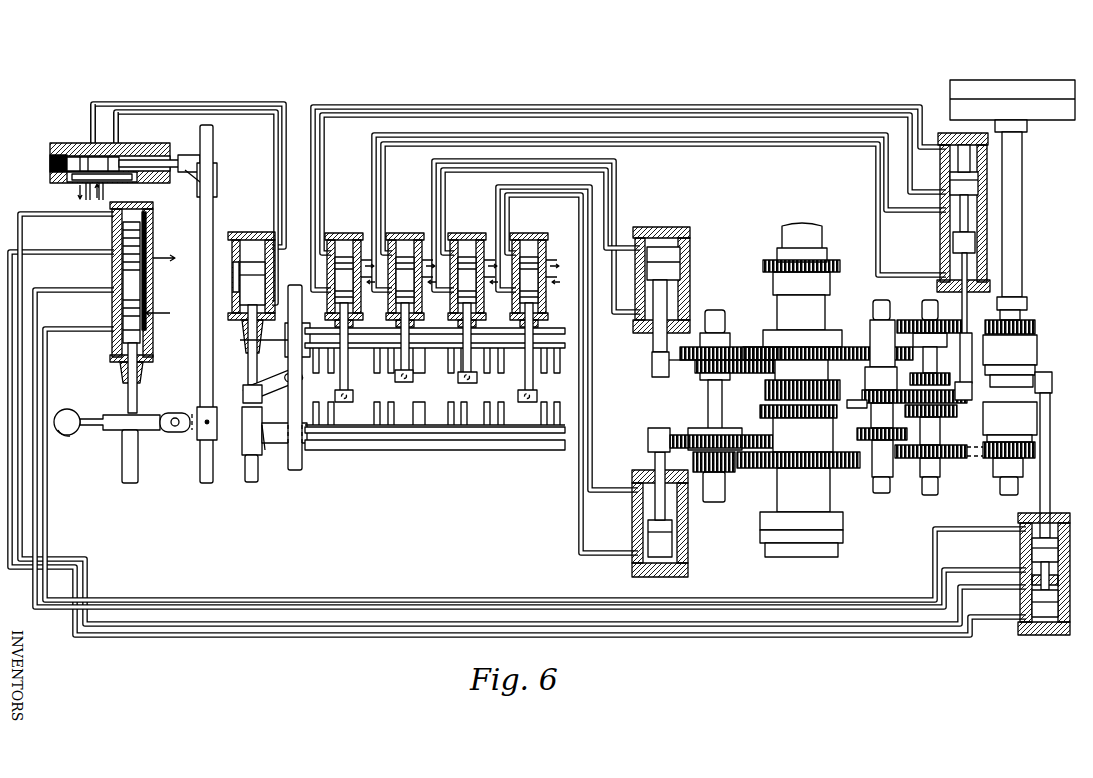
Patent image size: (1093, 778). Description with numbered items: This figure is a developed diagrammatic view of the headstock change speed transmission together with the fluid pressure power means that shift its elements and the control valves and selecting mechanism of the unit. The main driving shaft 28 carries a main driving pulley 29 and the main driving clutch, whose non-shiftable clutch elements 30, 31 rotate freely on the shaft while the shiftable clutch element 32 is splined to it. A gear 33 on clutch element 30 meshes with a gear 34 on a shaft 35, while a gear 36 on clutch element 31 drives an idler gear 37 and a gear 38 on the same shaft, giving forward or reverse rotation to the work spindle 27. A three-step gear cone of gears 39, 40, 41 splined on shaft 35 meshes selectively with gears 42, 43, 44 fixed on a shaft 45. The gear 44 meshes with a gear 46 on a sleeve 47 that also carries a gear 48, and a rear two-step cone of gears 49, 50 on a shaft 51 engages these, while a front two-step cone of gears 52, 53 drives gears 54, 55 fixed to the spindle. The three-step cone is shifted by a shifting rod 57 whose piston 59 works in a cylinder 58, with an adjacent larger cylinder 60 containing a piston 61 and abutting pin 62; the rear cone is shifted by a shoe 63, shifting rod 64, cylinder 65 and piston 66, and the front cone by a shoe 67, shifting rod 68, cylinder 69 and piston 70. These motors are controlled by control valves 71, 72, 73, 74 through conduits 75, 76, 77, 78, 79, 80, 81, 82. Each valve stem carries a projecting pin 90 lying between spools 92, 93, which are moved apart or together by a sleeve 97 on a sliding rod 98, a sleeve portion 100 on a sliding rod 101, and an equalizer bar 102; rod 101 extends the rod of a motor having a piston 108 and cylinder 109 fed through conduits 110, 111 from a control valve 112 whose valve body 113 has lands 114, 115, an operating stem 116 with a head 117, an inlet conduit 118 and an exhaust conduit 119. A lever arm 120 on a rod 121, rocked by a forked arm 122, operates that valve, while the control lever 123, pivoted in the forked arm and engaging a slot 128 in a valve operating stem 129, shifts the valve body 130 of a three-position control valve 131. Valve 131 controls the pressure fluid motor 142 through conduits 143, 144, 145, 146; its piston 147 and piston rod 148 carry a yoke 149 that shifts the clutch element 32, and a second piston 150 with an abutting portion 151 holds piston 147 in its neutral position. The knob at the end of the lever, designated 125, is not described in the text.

The work spindle 27 is at (805, 557).
The main driving shaft 28 is at (1022, 200).
The main driving pulley 29 is at (1047, 80).
The non-shiftable clutch element 30 is at (1037, 418).
The non-shiftable clutch element 31 is at (1037, 350).
The shiftable clutch element 32 is at (1035, 370).
The gear 33 is at (990, 458).
The gear 34 is at (950, 458).
The shaft 35 is at (930, 495).
The gear 36 is at (1037, 315).
The idler gear 37 is at (980, 320).
The gear 38 is at (912, 320).
The gear of three-step gear cone 39 is at (935, 417).
The gear of three-step gear cone 40 is at (957, 410).
The gear of three-step gear cone 41 is at (955, 375).
The gear 42 is at (857, 440).
The gear 43 is at (862, 405).
The gear 44 is at (862, 393).
The shaft 45 is at (883, 493).
The gear 46 is at (840, 347).
The sleeve 47 is at (828, 368).
The gear 48 is at (768, 390).
The gear of rear two-step gear cone 49 is at (735, 347).
The gear of rear two-step gear cone 50 is at (690, 375).
The shaft 51 is at (722, 488).
The gear of front two-step gear cone 52 is at (686, 423).
The gear of front two-step gear cone 53 is at (735, 465).
The gear 54 is at (795, 423).
The gear 55 is at (795, 470).
The shifting rod 57 is at (972, 345).
The cylinder 58 is at (942, 262).
The piston 59 is at (952, 242).
The cylinder 60 is at (975, 162).
The piston 61 is at (972, 185).
The abutting pin 62 is at (966, 215).
The shoe 63 is at (652, 362).
The shifting rod 64 is at (653, 350).
The cylinder 65 is at (682, 285).
The piston 66 is at (672, 262).
The shoe 67 is at (648, 440).
The shifting rod 68 is at (655, 458).
The cylinder 69 is at (645, 506).
The piston 70 is at (672, 537).
The control valve 71 is at (344, 233).
The control valve 72 is at (405, 233).
The control valve 73 is at (467, 233).
The control valve 74 is at (529, 233).
The conduit 75 is at (552, 107).
The conduit 76 is at (582, 115).
The conduit 77 is at (604, 135).
The conduit 78 is at (630, 144).
The conduit 79 is at (617, 180).
The conduit 80 is at (609, 205).
The conduit 81 is at (592, 410).
The conduit 82 is at (583, 440).
The projecting pin 90 is at (395, 383).
The spool 92 is at (432, 372).
The spool 93 is at (445, 450).
The sleeve 97 is at (264, 340).
The sliding rod 98 is at (303, 400).
The sleeve portion 100 is at (242, 440).
The sliding rod 101 is at (250, 350).
The equalizer bar 102 is at (270, 390).
The piston 108 is at (228, 300).
The cylinder 109 is at (242, 270).
The conduit 110 is at (242, 108).
The conduit 111 is at (255, 108).
The control valve 112 is at (143, 143).
The valve body 113 is at (97, 143).
The land 114 is at (80, 140).
The land 115 is at (118, 143).
The operating stem 116 is at (175, 160).
The head 117 is at (190, 155).
The conduit 118 is at (106, 192).
The exhaust conduit 119 is at (80, 192).
The lever arm 120 is at (195, 177).
The rod 121 is at (208, 250).
The forked arm 122 is at (197, 433).
The control lever 123 is at (155, 432).
The hand knob 125 is at (66, 438).
The slot 128 is at (140, 405).
The valve operating stem 129 is at (128, 395).
The valve body 130 is at (148, 282).
The control valve 131 is at (155, 235).
The pressure fluid motor 142 is at (1043, 635).
The conduit 143 is at (55, 331).
The conduit 144 is at (55, 292).
The conduit 145 is at (50, 218).
The conduit 146 is at (50, 252).
The piston 147 is at (1032, 548).
The piston rod 148 is at (1050, 500).
The yoke 149 is at (1052, 382).
The second piston 150 is at (1024, 610).
The abutting portion 151 is at (1032, 582).